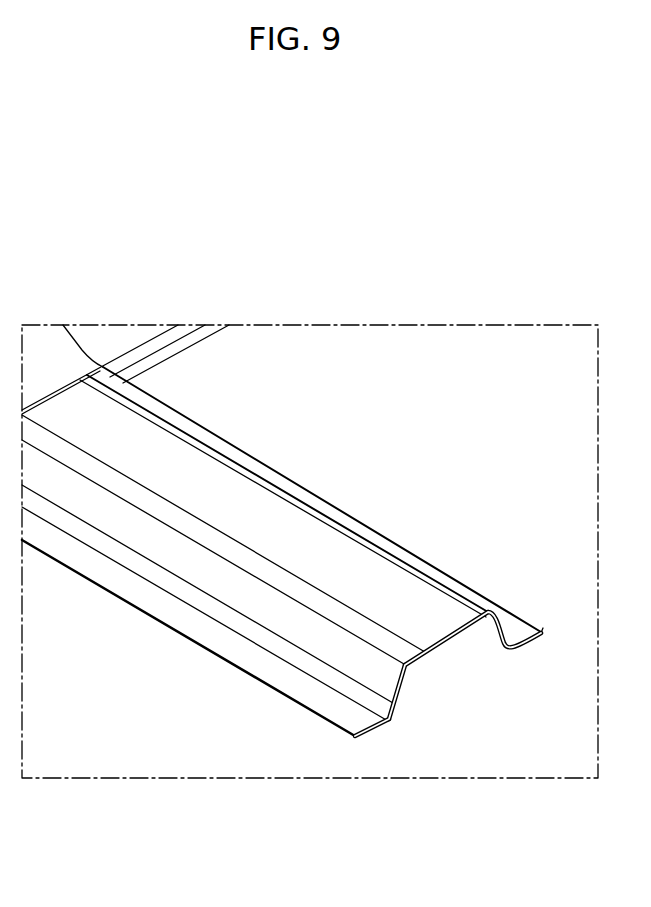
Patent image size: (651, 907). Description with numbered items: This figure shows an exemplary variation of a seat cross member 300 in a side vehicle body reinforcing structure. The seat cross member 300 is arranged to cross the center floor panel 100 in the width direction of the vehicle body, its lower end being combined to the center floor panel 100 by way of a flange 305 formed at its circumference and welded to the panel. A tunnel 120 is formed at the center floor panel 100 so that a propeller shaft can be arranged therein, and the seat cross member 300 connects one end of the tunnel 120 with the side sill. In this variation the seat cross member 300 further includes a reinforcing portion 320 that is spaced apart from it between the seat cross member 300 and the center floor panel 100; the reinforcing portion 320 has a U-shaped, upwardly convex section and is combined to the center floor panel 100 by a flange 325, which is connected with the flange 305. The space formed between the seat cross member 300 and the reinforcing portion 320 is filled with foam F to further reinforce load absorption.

The center floor panel 100 is at (125, 720).
The tunnel 120 is at (131, 340).
The seat cross member 300 is at (278, 512).
The flange 305 is at (273, 678).
The reinforcing portion 320 is at (437, 641).
The flange 325 is at (390, 719).
The foam F is at (453, 627).